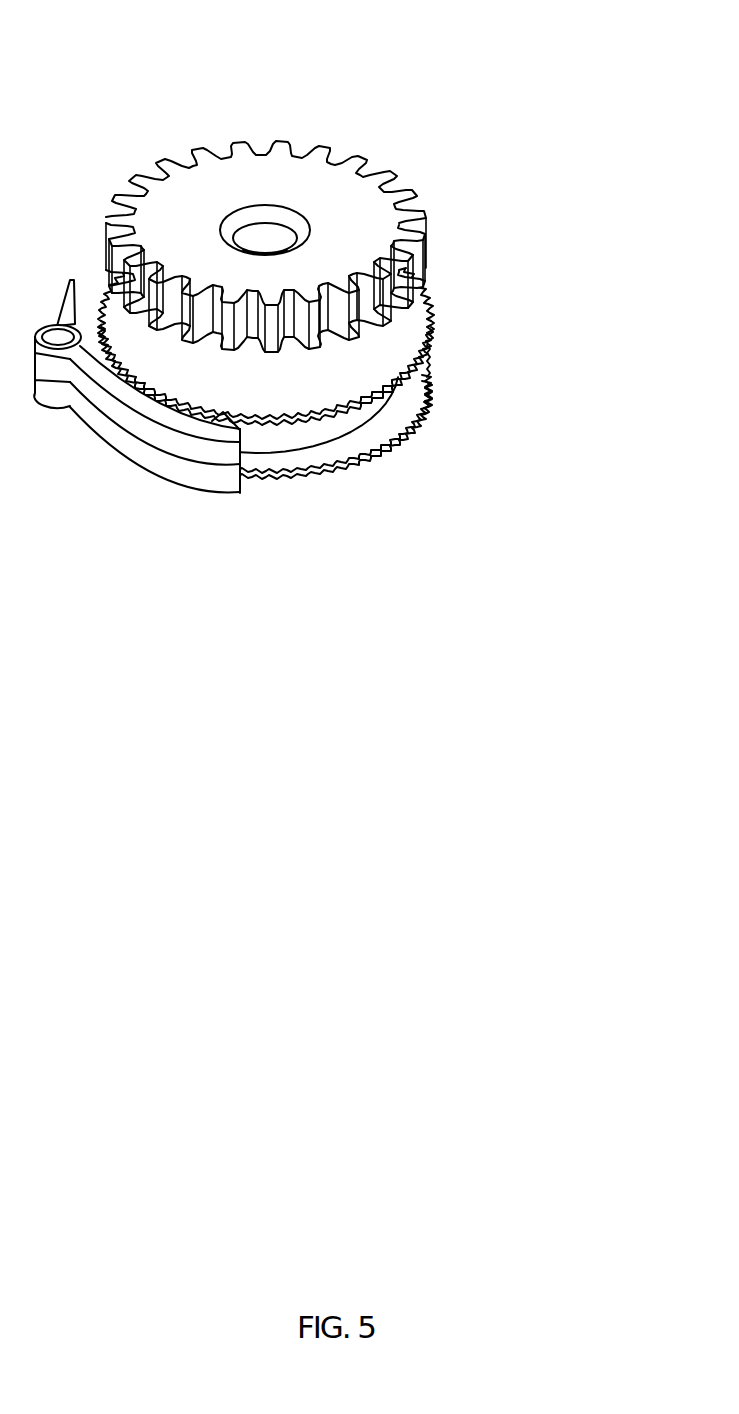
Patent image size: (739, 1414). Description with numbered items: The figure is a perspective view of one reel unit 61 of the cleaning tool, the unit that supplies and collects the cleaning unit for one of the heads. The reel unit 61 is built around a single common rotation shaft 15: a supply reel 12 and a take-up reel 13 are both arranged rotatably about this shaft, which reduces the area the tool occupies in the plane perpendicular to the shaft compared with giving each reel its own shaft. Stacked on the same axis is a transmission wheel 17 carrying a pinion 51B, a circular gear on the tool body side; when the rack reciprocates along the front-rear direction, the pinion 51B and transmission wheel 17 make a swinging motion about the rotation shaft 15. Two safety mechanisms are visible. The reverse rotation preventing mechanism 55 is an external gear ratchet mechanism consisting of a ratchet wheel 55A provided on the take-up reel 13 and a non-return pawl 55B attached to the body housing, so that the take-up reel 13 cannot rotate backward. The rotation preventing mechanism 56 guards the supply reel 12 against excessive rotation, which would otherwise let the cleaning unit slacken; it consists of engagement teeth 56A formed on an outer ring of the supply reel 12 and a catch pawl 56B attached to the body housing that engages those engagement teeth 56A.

The reel unit 61 is at (319, 326).
The rotation shaft 15 is at (263, 248).
The pinion 51B is at (357, 100).
The transmission wheel 17 is at (355, 213).
The take-up reel 13 is at (351, 356).
The supply reel 12 is at (407, 486).
The ratchet wheel 55A is at (330, 408).
The reverse rotation preventing mechanism 55 is at (486, 455).
The non-return pawl 55B is at (320, 465).
The catch pawl 56B is at (182, 477).
The engagement teeth 56A is at (283, 470).
The rotation preventing mechanism 56 is at (231, 463).